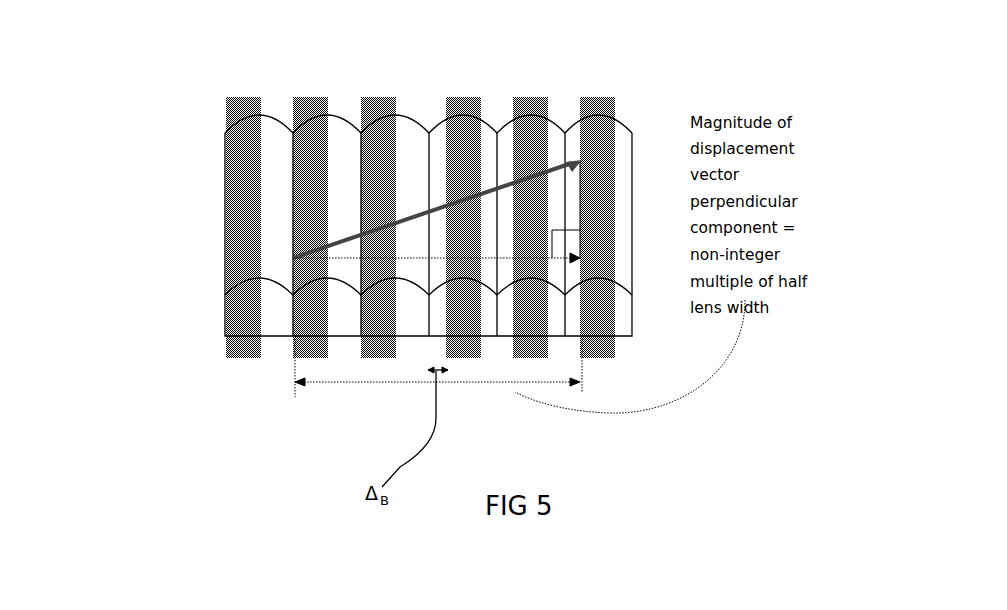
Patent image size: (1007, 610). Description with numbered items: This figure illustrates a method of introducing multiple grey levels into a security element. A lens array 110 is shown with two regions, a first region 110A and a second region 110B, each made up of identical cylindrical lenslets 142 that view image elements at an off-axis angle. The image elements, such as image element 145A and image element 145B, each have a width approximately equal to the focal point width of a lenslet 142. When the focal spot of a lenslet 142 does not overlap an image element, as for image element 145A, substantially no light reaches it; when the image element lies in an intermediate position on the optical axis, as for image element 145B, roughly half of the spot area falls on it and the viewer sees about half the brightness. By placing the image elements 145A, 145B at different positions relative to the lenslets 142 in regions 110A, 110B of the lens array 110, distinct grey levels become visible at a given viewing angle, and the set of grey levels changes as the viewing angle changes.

The lenticular lens array 110 is at (178, 208).
The first lens array region 110A is at (430, 88).
The second lens array region 110B is at (630, 88).
The lenslet 142 is at (343, 116).
The image element 145A is at (378, 345).
The image element 145B is at (460, 347).